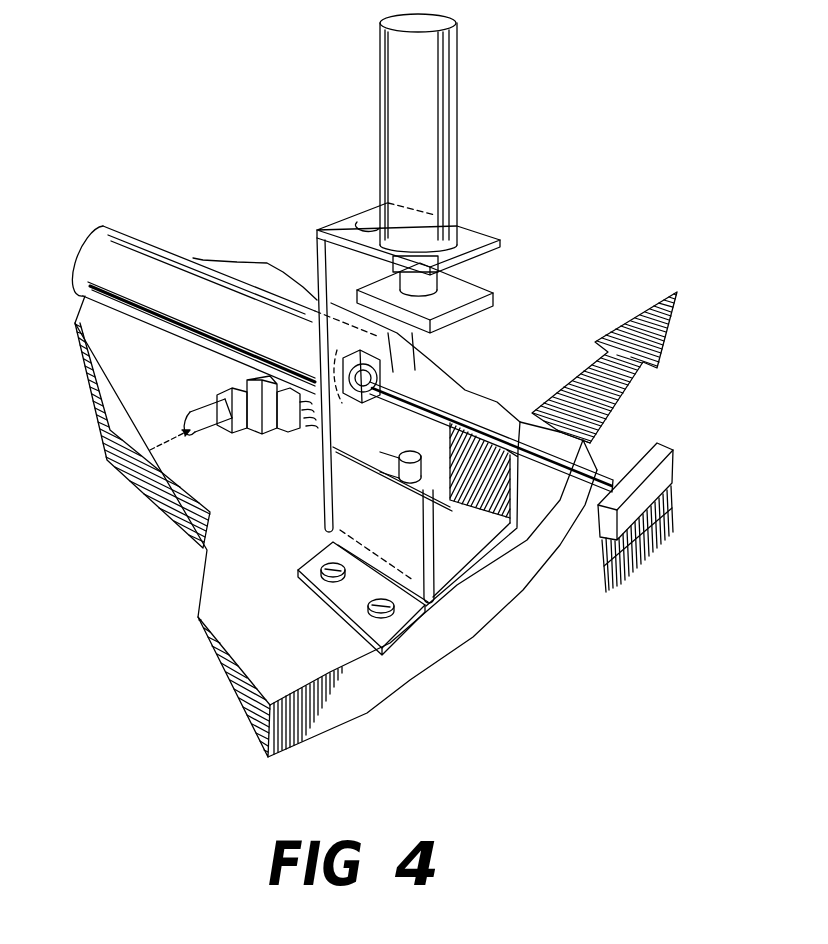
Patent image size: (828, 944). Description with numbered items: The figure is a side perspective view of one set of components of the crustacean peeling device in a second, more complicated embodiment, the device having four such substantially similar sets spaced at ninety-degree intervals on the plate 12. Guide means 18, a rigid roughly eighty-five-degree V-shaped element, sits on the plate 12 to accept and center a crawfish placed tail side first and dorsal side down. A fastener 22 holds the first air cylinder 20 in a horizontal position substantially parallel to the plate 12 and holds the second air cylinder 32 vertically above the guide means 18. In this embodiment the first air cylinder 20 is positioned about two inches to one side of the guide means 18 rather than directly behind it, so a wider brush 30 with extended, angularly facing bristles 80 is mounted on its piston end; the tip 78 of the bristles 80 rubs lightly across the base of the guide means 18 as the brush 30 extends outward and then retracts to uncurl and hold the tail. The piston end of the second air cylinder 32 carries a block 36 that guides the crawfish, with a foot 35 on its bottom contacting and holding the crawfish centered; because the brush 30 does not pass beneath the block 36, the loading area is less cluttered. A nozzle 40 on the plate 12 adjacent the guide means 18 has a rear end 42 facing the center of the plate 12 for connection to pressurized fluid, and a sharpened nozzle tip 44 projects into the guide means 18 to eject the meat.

The plate 12 is at (212, 594).
The guide means 18 is at (340, 508).
The first air cylinder 20 is at (140, 258).
The fastener 22 is at (343, 225).
The brush 30 is at (667, 470).
The second air cylinder 32 is at (390, 108).
The foot 35 is at (407, 333).
The block 36 is at (470, 292).
The nozzle 40 is at (390, 480).
The rear end 42 is at (270, 381).
The nozzle tip 44 is at (442, 432).
The tip 78 is at (655, 564).
The bristles 80 is at (672, 512).